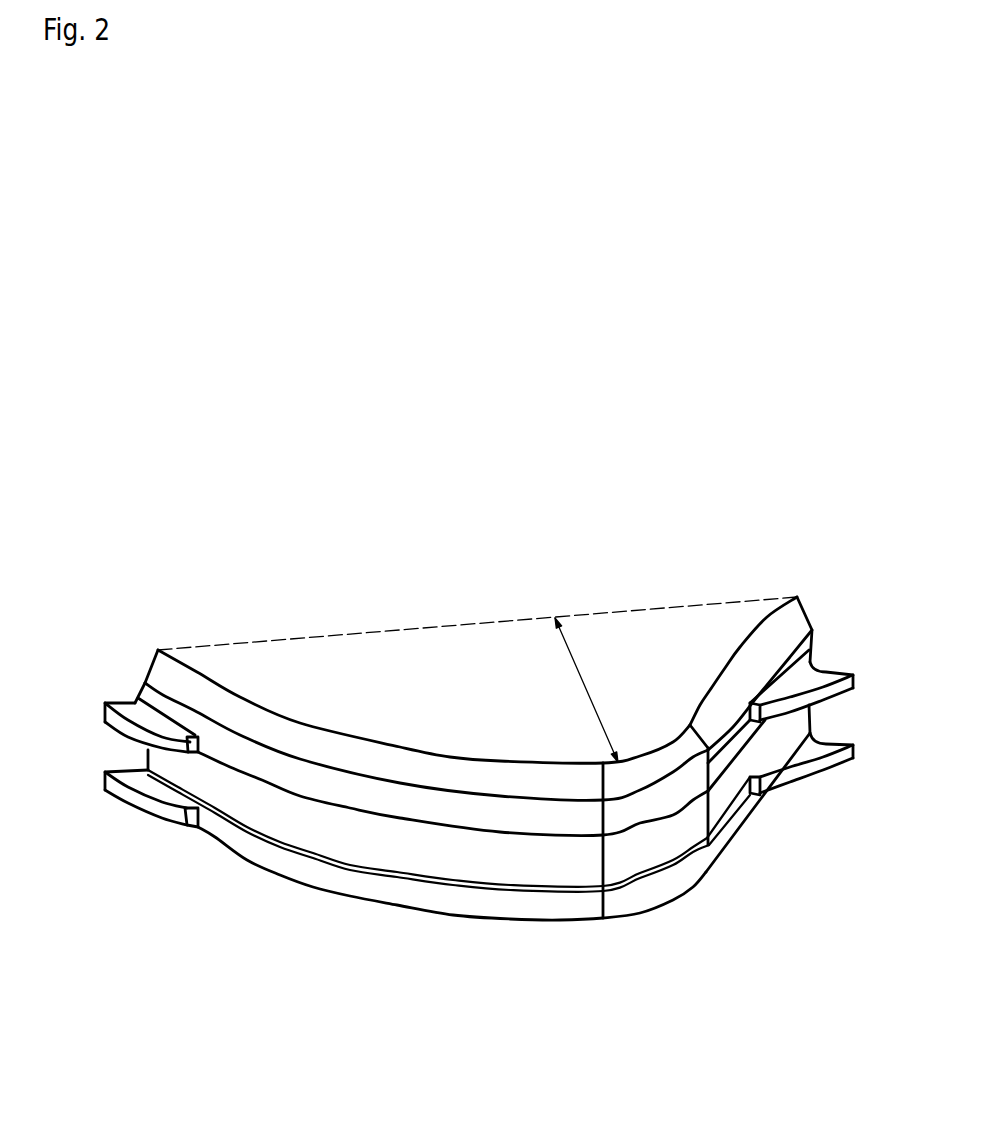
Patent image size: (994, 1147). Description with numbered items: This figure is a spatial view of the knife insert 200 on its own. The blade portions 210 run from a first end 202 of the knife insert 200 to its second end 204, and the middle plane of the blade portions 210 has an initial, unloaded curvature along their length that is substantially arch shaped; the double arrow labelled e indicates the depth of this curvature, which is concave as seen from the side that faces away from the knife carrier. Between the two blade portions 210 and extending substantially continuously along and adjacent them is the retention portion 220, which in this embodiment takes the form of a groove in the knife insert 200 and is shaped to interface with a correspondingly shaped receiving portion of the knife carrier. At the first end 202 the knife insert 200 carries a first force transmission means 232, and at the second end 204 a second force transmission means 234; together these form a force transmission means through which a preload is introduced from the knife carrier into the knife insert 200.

The knife insert 200 is at (470, 508).
The first end 202 is at (142, 685).
The second end 204 is at (812, 630).
The blade portions 210 is at (390, 745).
The retention portion 220 is at (452, 867).
The first force transmission means 232 is at (104, 713).
The second force transmission means 234 is at (855, 680).